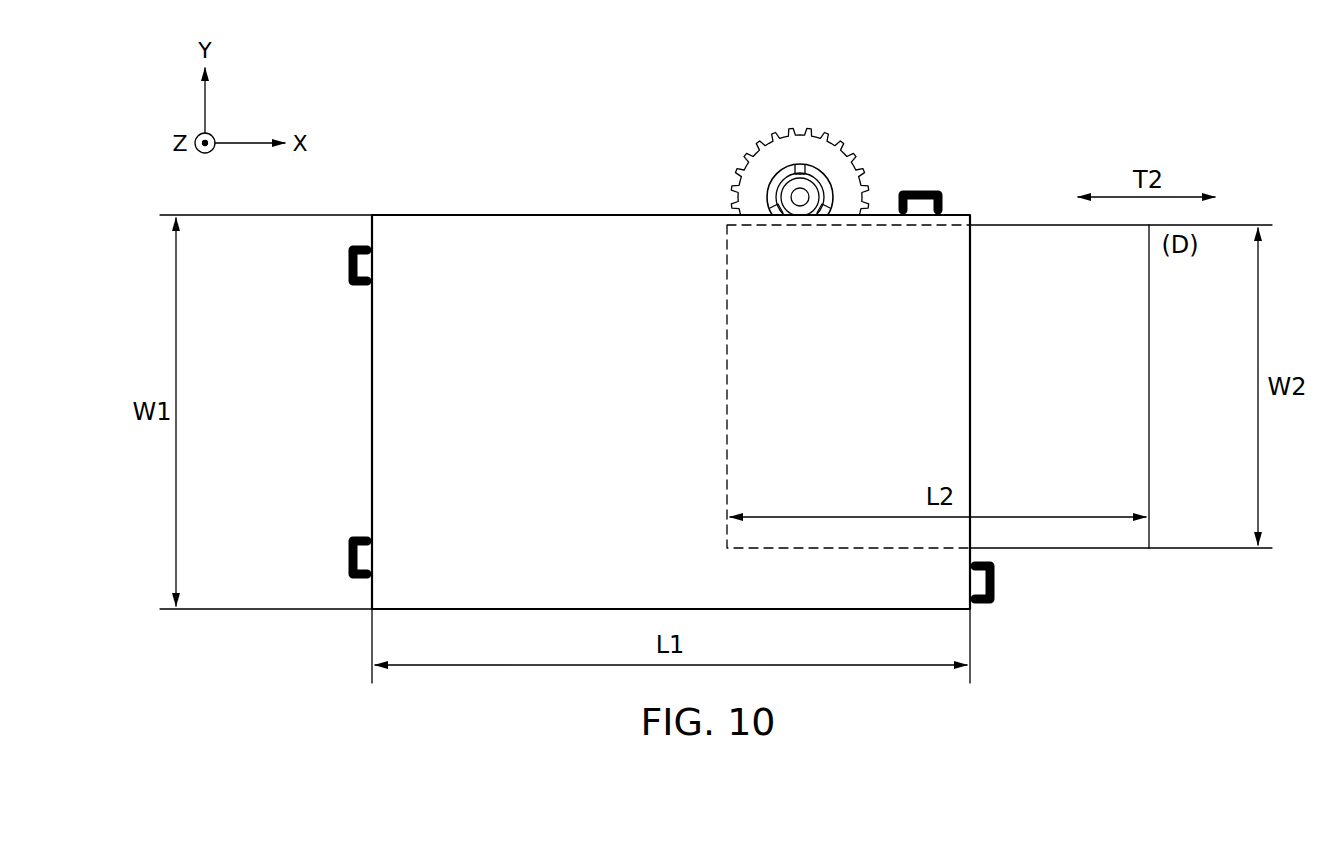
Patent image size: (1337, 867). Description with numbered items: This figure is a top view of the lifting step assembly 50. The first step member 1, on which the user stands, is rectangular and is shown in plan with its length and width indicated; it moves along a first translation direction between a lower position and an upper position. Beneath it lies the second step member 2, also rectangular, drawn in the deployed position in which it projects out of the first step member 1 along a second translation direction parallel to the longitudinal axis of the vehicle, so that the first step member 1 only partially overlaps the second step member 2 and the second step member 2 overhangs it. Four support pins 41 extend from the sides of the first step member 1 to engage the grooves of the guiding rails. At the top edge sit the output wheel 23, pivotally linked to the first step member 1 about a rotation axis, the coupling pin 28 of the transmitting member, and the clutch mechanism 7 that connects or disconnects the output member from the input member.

The lifting step assembly 50 is at (657, 52).
The first step member 1 is at (569, 268).
The second step member 2 is at (1082, 357).
The output wheel 23 is at (838, 160).
The coupling pin 28 is at (772, 208).
The clutch mechanism 7 is at (829, 195).
The support pin 41 is at (350, 262).